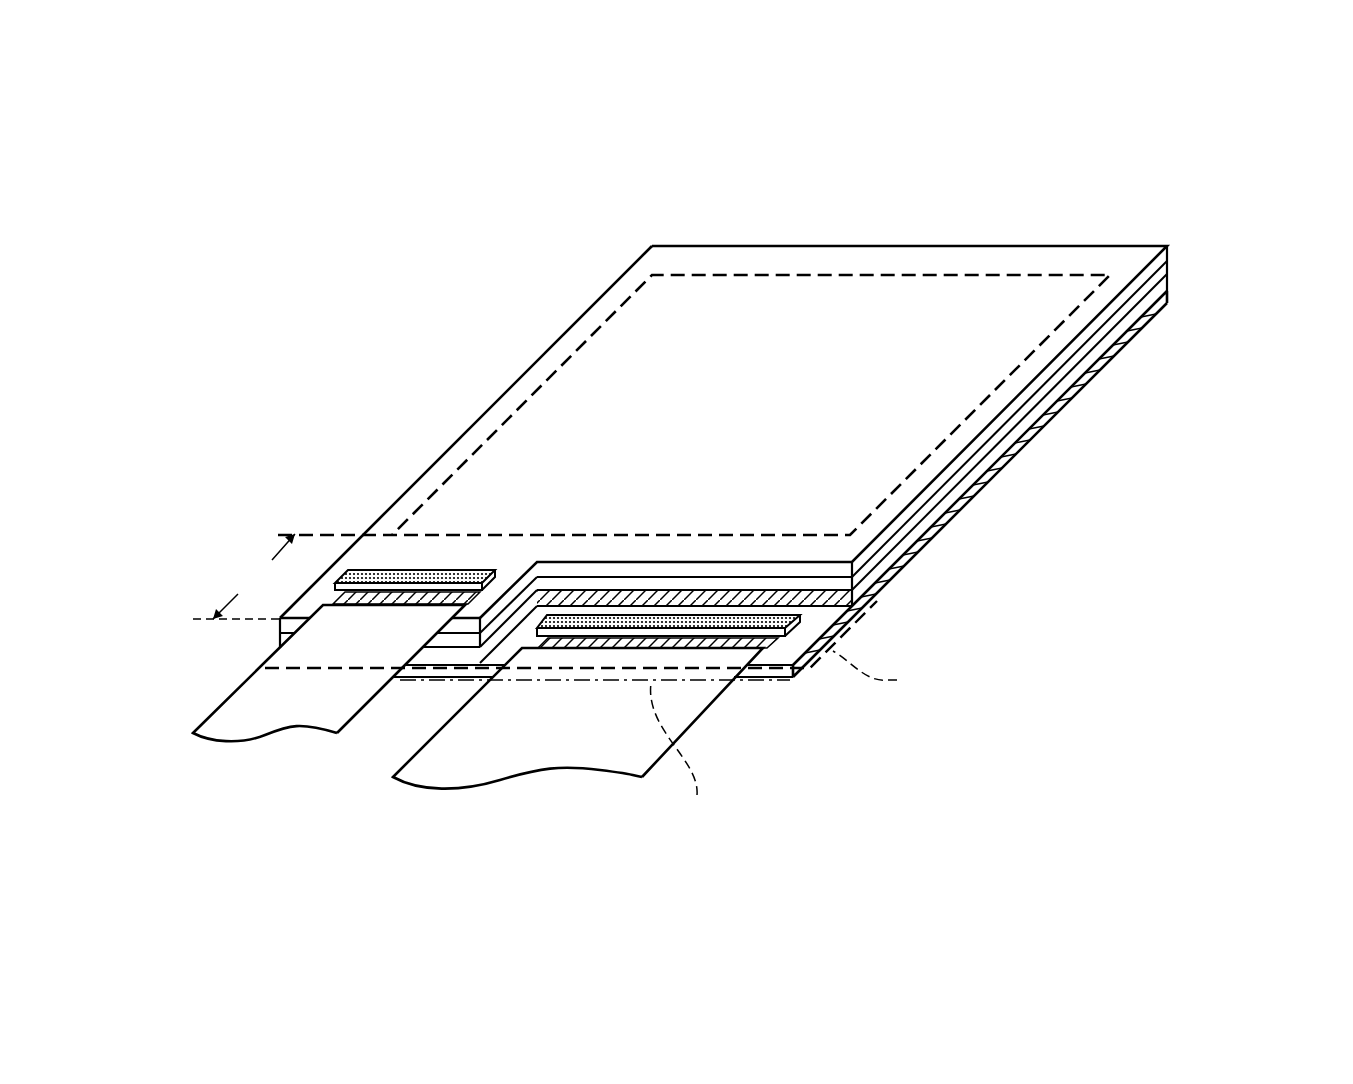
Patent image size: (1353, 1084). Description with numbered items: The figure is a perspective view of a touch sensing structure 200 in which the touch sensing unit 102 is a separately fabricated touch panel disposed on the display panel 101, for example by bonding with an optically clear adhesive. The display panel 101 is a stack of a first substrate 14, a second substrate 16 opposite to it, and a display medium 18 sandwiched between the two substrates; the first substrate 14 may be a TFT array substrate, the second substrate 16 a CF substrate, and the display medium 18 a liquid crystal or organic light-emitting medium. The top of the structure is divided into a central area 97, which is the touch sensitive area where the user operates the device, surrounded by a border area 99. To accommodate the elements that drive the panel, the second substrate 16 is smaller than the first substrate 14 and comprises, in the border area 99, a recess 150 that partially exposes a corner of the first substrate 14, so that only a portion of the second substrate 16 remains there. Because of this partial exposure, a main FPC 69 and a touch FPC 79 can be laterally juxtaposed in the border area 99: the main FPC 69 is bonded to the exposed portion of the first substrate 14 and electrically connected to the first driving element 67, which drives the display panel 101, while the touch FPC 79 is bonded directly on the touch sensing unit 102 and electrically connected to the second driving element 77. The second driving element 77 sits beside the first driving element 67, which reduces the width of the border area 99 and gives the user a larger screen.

The touch sensing structure 200 is at (1140, 188).
The display panel 101 is at (1258, 238).
The touch sensing unit 102 is at (1168, 252).
The second substrate 16 is at (1168, 267).
The display medium 18 is at (1168, 284).
The first substrate 14 is at (1168, 298).
The border area 99 is at (953, 258).
The central area 97 is at (827, 322).
The second driving element 77 is at (420, 570).
The first driving element 67 is at (705, 632).
The touch FPC 79 is at (243, 705).
The main FPC 69 is at (437, 752).
The recess 150 is at (815, 628).